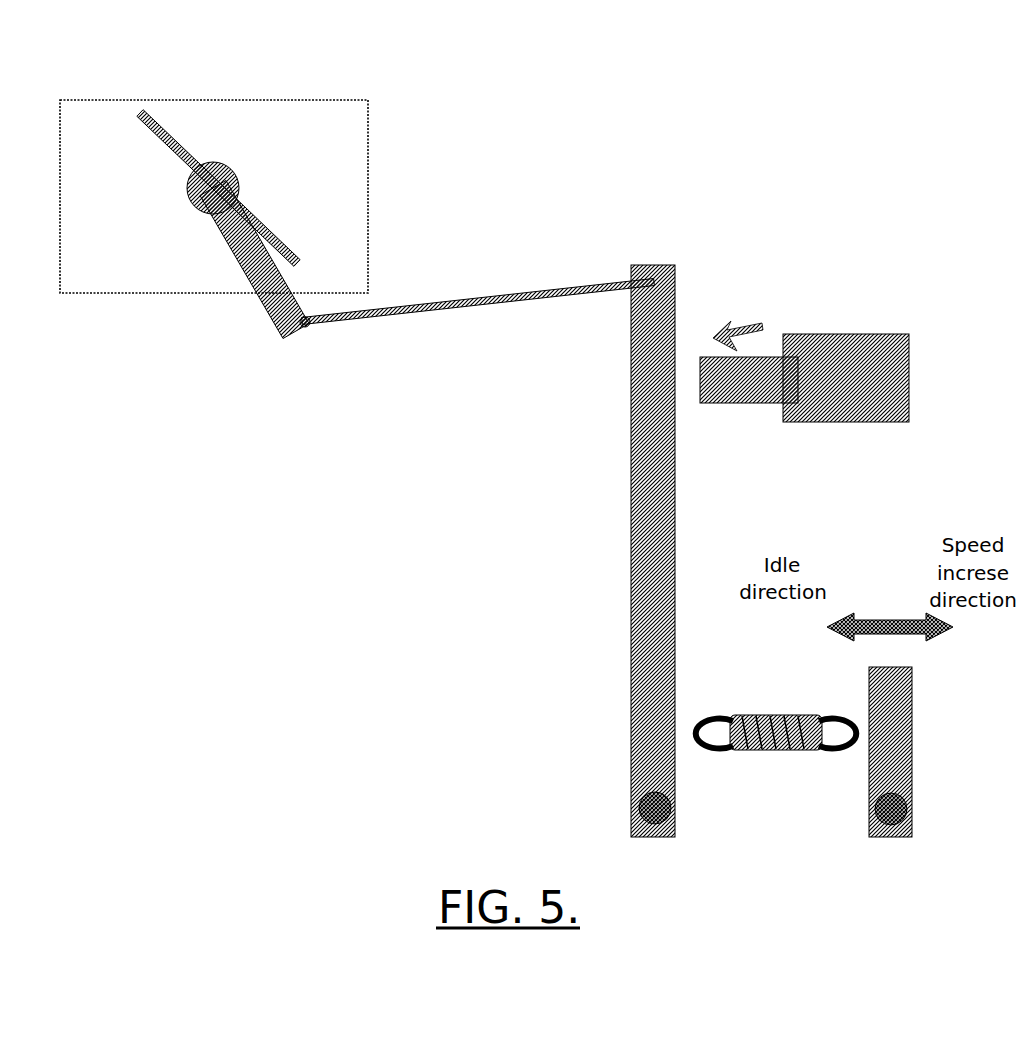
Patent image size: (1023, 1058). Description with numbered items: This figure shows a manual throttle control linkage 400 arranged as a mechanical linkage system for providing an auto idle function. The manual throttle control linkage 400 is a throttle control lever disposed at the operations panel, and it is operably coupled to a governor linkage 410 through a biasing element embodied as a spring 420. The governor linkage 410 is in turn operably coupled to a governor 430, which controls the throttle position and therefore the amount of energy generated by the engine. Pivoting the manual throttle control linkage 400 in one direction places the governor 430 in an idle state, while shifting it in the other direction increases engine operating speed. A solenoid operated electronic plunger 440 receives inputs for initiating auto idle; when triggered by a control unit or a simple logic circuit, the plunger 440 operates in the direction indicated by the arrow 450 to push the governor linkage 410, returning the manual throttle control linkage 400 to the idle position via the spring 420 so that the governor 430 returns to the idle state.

The manual throttle control linkage 400 is at (905, 727).
The governor linkage 410 is at (645, 550).
The spring 420 is at (770, 727).
The governor 430 is at (272, 84).
The solenoid operated electronic plunger 440 is at (855, 340).
The arrow 450 is at (740, 328).